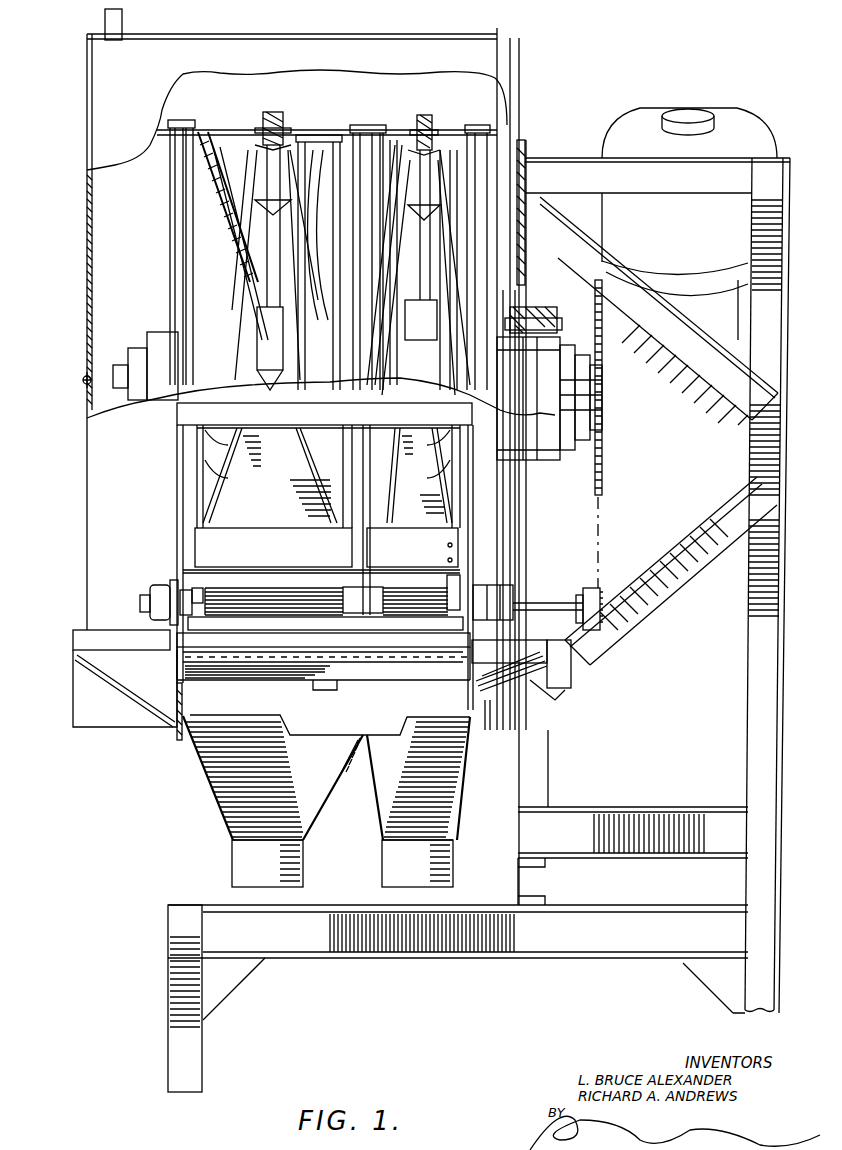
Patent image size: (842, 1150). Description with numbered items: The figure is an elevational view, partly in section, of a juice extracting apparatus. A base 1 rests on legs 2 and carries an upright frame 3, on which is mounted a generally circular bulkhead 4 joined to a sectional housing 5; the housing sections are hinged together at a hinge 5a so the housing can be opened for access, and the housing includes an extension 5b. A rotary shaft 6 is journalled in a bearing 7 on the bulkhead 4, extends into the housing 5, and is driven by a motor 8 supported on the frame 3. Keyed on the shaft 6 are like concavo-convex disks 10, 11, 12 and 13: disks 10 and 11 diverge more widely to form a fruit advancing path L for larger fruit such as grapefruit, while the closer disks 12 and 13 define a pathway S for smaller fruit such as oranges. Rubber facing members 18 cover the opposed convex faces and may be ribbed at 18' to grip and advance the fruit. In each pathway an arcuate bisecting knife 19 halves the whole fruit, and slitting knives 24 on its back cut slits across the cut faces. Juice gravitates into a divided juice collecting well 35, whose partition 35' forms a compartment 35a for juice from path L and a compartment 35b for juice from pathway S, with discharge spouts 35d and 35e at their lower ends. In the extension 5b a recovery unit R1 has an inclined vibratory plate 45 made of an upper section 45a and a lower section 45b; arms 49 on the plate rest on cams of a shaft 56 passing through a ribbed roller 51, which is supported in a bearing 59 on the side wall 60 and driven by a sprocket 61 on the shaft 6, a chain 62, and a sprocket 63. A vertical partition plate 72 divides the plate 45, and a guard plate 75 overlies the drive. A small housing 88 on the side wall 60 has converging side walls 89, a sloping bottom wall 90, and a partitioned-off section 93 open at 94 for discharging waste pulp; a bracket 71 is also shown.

The base 1 is at (440, 958).
The legs 2 is at (274, 58).
The upright frame 3 is at (745, 622).
The bulkhead 4 is at (535, 127).
The sectional housing 5 is at (416, 46).
The hinge 5a is at (84, 378).
The housing extension 5b is at (177, 455).
The rotary shaft 6 is at (597, 380).
The bearing 7 is at (550, 306).
The motor 8 is at (735, 118).
The disk 10 is at (213, 147).
The disk 11 is at (325, 150).
The disk 12 is at (393, 140).
The disk 13 is at (460, 145).
The rubber facing members 18 is at (337, 311).
The ribs 18' is at (345, 279).
The arcuate bisecting knife 19 is at (262, 150).
The slitting knives 24 is at (265, 210).
The juice collecting well 35 is at (306, 777).
The partition 35' is at (366, 730).
The compartment 35a is at (337, 782).
The compartment 35b is at (387, 750).
The discharge spout 35d is at (232, 858).
The discharge spout 35e is at (390, 863).
The vibratory plate 45 is at (195, 538).
The upper plate section 45a is at (290, 541).
The lower plate section 45b is at (340, 585).
The arms 49 is at (215, 583).
The roller 51 is at (290, 595).
The shaft 56 is at (540, 604).
The bearing 59 is at (148, 598).
The side wall 60 is at (177, 498).
The sprocket 61 is at (603, 483).
The chain 62 is at (600, 514).
The sprocket 63 is at (597, 587).
The motor bracket 71 is at (240, 282).
The vertical partition plate 72 is at (472, 232).
The guard plate 75 is at (345, 608).
The small housing 88 is at (310, 646).
The side walls 89 is at (175, 700).
The bottom wall 90 is at (485, 712).
The partitioned-off section 93 is at (565, 665).
The opening 94 is at (565, 690).
The fruit advancing path L is at (298, 150).
The fruit advancing pathway S is at (430, 145).
The juice and pulp recovery unit R1 is at (213, 560).